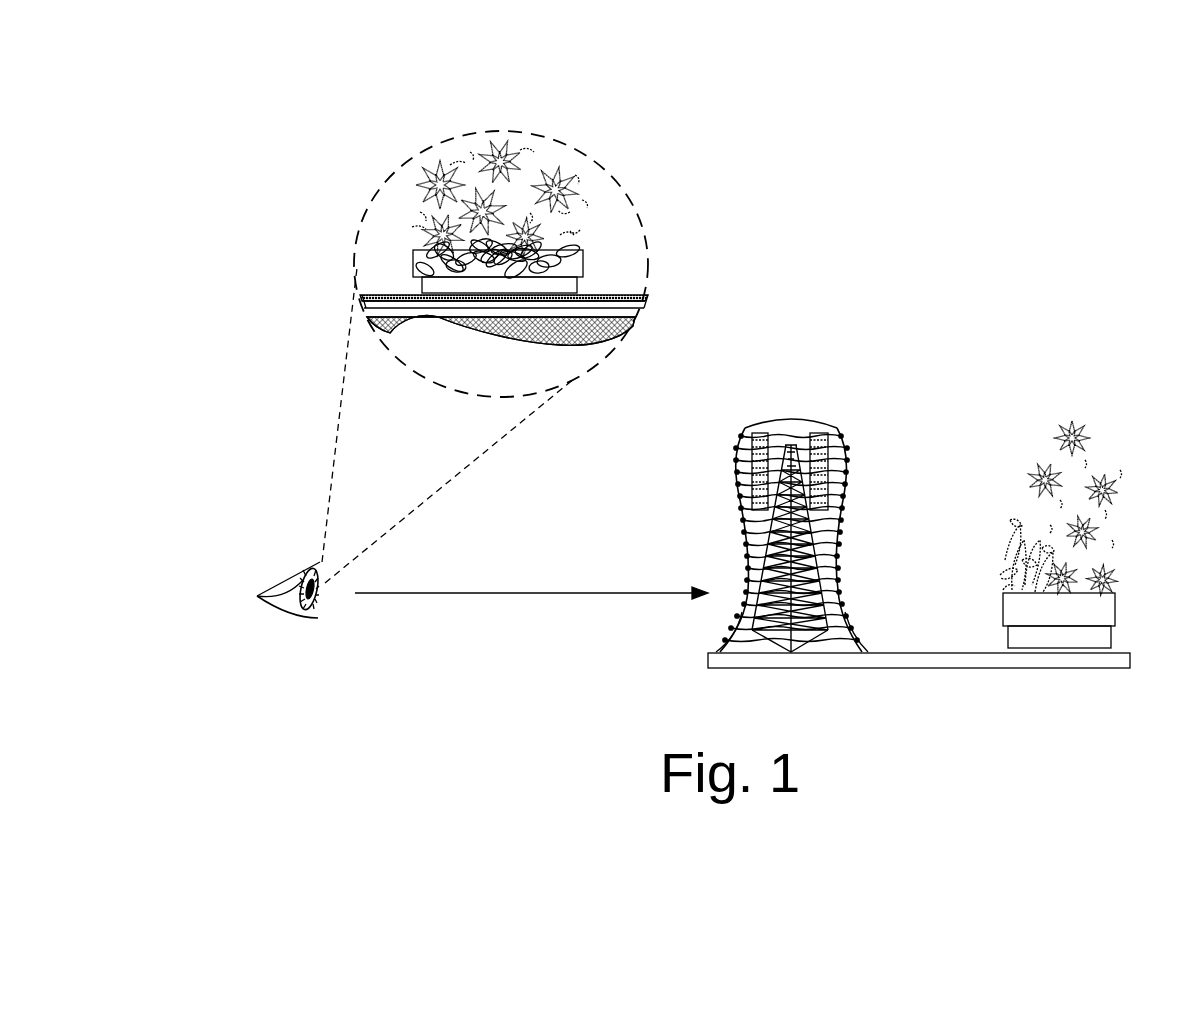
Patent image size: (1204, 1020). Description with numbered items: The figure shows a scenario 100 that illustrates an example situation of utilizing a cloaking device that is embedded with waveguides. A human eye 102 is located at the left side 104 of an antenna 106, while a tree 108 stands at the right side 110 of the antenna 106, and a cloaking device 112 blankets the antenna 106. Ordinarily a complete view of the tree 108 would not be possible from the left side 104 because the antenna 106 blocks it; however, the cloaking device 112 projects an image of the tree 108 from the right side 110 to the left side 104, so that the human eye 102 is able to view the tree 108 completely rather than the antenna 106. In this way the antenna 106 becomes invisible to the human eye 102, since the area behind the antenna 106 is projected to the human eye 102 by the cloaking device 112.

The scenario 100 is at (253, 90).
The human eye 102 is at (292, 582).
The left side 104 is at (706, 554).
The antenna 106 is at (768, 640).
The tree 108 is at (370, 208).
The right side 110 is at (872, 556).
The cloaking device 112 is at (740, 430).